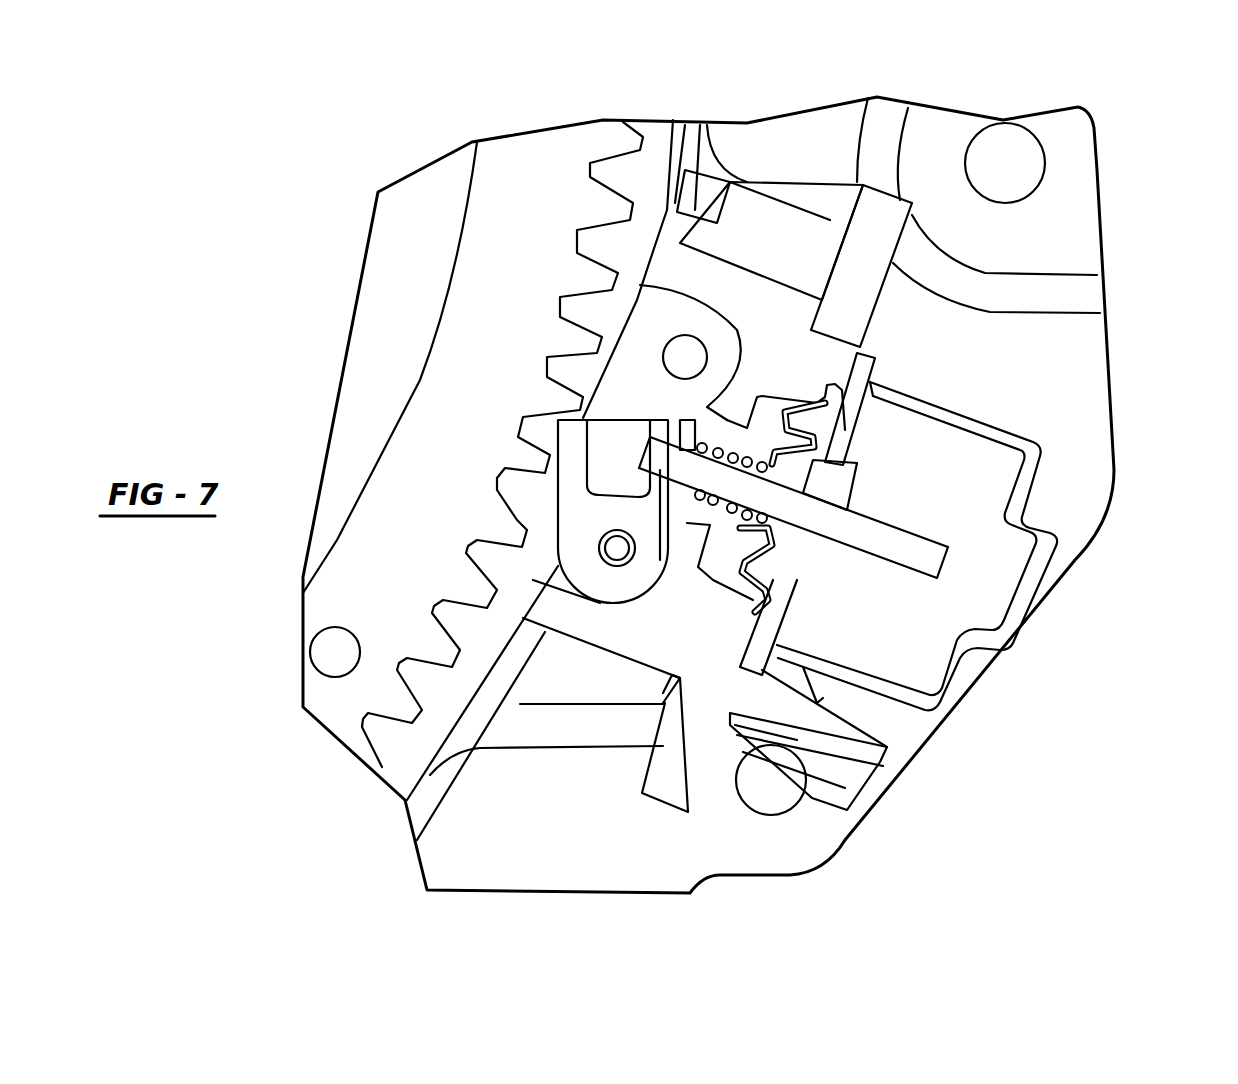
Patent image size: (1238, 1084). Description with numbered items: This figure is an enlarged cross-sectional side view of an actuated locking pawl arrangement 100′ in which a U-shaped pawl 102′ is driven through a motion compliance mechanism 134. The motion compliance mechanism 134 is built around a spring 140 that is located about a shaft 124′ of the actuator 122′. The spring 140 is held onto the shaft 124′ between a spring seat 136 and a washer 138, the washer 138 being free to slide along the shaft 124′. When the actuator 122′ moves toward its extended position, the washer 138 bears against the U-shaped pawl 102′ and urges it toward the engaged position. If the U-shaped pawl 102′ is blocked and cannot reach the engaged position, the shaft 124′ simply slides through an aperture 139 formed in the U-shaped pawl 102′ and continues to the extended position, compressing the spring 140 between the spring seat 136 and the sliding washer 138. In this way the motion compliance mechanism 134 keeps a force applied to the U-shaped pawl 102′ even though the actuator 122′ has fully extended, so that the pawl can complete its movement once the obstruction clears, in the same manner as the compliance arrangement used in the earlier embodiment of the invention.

The actuated locking pawl arrangement 100′ is at (370, 154).
The U-shaped pawl 102′ is at (577, 573).
The actuator 122′ is at (1013, 630).
The shaft 124′ is at (657, 456).
The motion compliance mechanism 134 is at (767, 380).
The spring seat 136 is at (782, 512).
The washer 138 is at (741, 335).
The aperture 139 is at (658, 470).
The spring 140 is at (710, 557).